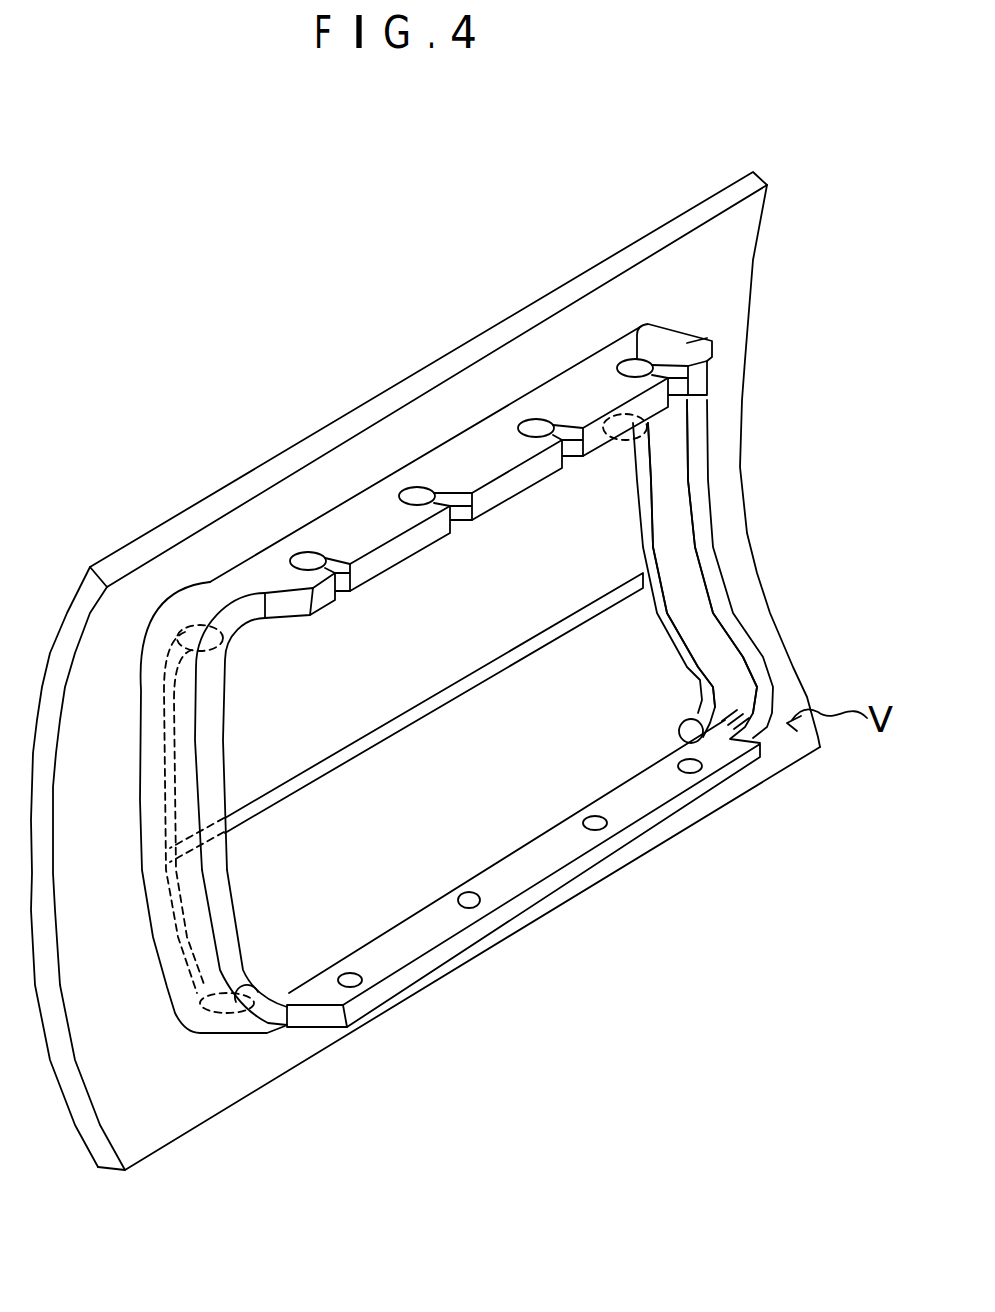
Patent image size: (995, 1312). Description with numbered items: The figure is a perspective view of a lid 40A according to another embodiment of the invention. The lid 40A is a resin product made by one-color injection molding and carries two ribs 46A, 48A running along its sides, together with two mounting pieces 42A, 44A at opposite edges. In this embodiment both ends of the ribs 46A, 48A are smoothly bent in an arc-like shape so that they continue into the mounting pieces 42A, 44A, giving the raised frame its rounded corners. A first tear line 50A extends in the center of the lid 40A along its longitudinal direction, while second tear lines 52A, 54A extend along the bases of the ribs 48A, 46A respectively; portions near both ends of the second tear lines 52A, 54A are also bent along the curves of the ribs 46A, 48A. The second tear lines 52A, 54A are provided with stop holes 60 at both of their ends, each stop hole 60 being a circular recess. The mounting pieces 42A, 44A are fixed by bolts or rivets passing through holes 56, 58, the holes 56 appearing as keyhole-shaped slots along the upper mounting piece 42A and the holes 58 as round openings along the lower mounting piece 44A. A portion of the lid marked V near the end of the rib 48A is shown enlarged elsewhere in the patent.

The lid 40A is at (530, 250).
The mounting piece 42A is at (453, 460).
The mounting piece 44A is at (548, 857).
The rib 46A is at (220, 905).
The rib 48A is at (677, 533).
The first tear line 50A is at (400, 722).
The second tear line 52A is at (693, 677).
The second tear line 54A is at (170, 773).
The hole 56 is at (640, 366).
The hole 58 is at (607, 822).
The stop hole 60 is at (222, 648).